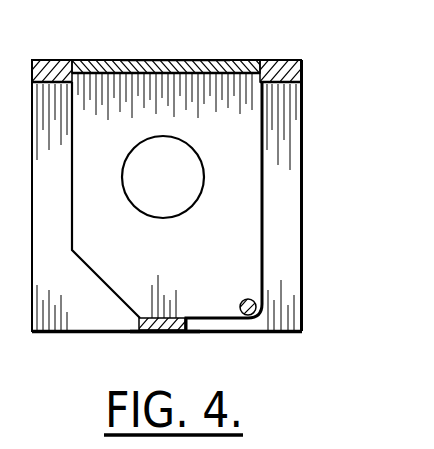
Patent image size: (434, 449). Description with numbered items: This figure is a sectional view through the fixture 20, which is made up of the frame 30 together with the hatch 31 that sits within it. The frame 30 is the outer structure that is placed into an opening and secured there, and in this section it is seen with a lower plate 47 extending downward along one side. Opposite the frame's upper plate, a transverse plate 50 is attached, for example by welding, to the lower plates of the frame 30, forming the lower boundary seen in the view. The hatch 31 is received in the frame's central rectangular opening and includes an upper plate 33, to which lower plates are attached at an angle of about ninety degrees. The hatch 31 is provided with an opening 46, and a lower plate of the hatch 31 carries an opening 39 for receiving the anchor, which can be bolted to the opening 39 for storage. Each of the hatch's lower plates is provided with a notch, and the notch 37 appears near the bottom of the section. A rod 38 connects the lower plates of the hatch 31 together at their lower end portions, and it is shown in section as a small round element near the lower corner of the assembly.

The fixture 20 is at (303, 213).
The frame 30 is at (302, 70).
The hatch 31 is at (110, 60).
The upper plate 33 is at (250, 60).
The opening 46 is at (170, 62).
The notch 37 is at (175, 306).
The rod 38 is at (252, 298).
The opening 39 is at (163, 190).
The lower plate 47 is at (88, 308).
The transverse plate 50 is at (165, 334).